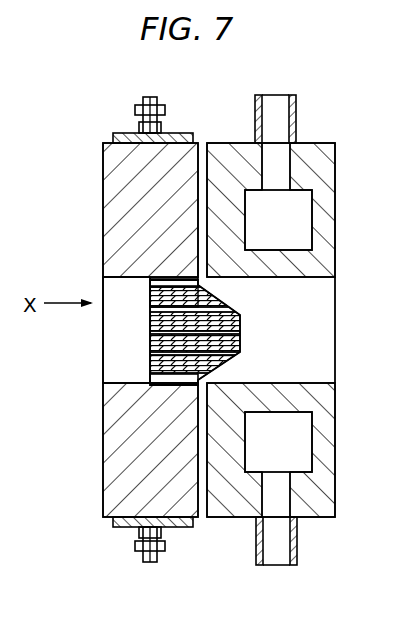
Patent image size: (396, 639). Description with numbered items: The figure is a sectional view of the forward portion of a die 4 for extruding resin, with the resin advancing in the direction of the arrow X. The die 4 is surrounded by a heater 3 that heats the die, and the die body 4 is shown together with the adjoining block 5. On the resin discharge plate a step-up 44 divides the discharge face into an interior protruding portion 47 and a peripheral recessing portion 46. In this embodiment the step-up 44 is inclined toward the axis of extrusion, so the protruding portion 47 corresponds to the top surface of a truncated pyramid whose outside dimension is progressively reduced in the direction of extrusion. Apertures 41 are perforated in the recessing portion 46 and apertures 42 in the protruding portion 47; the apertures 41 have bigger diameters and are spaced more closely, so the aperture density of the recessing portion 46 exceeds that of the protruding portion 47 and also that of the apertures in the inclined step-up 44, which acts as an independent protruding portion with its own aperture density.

The heater 3 is at (186, 133).
The die 4 is at (116, 212).
The right die block 5 is at (317, 166).
The apertures 41 is at (150, 287).
The apertures 42 is at (150, 333).
The step-up 44 is at (216, 299).
The recessing portion 46 is at (200, 283).
The protruding portion 47 is at (241, 331).